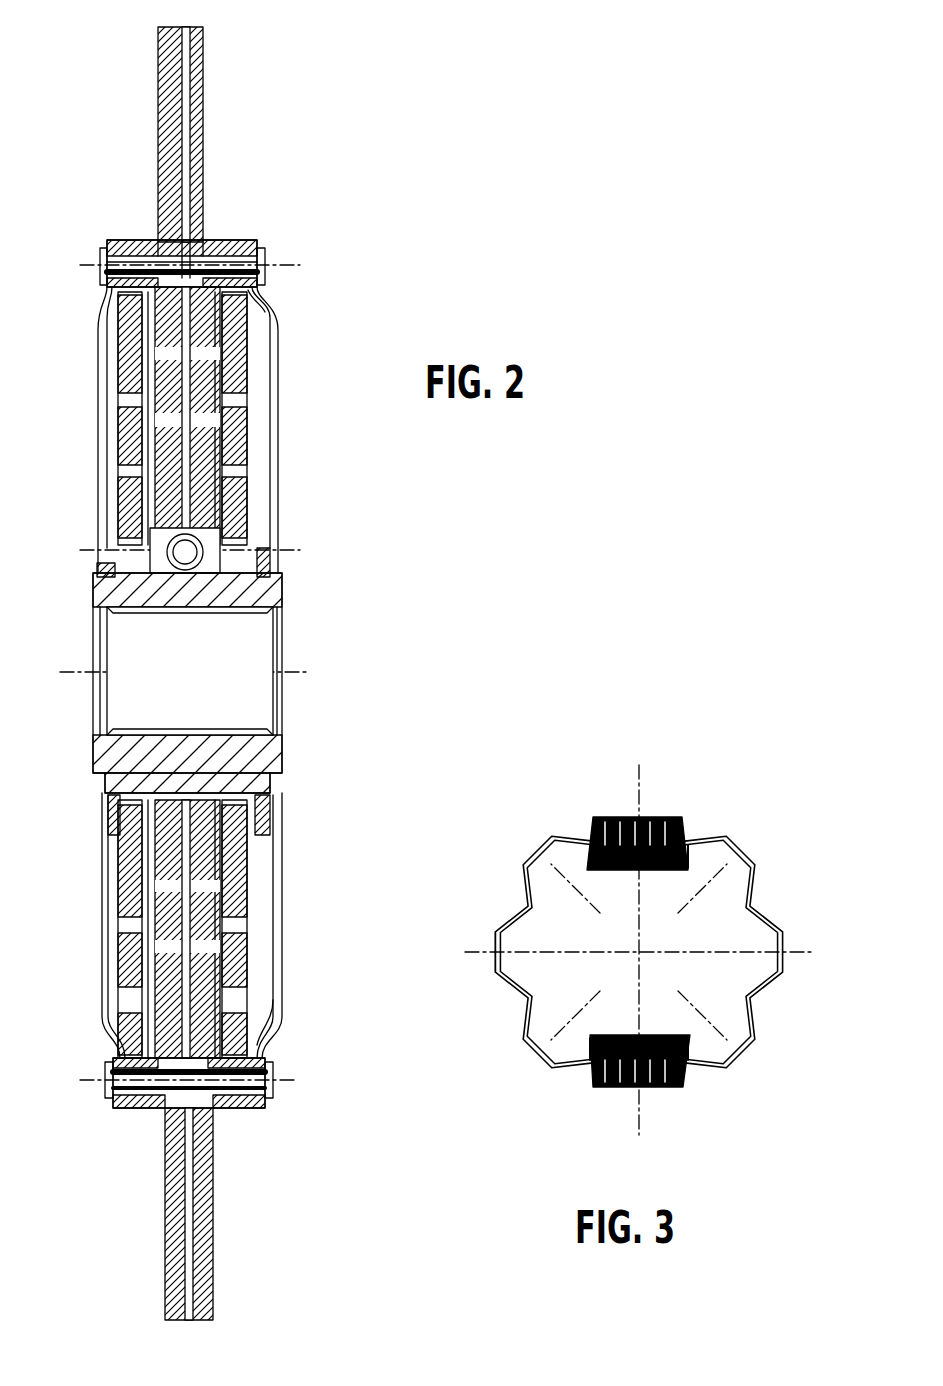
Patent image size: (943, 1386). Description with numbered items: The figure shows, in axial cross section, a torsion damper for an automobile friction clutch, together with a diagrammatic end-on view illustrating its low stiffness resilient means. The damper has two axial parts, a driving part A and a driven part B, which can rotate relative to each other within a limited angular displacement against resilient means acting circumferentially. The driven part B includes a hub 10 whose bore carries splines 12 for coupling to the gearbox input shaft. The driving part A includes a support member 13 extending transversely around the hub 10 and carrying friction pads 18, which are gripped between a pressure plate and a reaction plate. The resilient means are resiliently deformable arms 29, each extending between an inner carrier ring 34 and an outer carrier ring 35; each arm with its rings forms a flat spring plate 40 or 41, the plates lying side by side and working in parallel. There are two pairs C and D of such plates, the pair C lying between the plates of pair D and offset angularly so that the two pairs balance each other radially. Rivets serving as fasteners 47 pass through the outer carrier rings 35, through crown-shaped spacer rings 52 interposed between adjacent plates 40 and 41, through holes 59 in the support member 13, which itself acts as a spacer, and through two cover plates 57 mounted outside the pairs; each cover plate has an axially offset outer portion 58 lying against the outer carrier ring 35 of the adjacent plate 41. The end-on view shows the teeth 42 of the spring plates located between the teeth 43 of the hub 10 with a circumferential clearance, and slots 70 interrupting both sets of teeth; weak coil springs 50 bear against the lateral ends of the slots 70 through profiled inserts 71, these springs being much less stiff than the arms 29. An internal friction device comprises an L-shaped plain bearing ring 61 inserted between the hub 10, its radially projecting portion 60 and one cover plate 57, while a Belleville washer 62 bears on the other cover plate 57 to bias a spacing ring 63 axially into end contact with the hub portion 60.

In FIG. 2, the hub 10 is at (230, 683).
In FIG. 3, the hub 10 is at (700, 940).
In FIG. 2, the splines 12 is at (168, 612).
In FIG. 2, the support member 13 is at (197, 236).
In FIG. 2, the friction pads 18 is at (177, 1323).
In FIG. 2, the resiliently deformable arms 29 is at (258, 373).
In FIG. 2, the inner carrier ring 34 is at (257, 528).
In FIG. 2, the outer carrier ring 35 is at (257, 1013).
In FIG. 2, the spring plate 40 is at (160, 1108).
In FIG. 2, the spring plate 41 is at (133, 1108).
In FIG. 3, the teeth 42 is at (757, 997).
In FIG. 3, the teeth 43 is at (510, 963).
In FIG. 2, the fasteners 47 is at (267, 263).
In FIG. 2, the coil springs 50 is at (217, 512).
In FIG. 3, the coil springs 50 is at (650, 822).
In FIG. 2, the spacer rings 52 is at (243, 292).
In FIG. 2, the cover plates 57 is at (287, 902).
In FIG. 2, the outer portion 58 is at (263, 295).
In FIG. 2, the holes 59 is at (236, 236).
In FIG. 2, the radially projecting portion 60 is at (112, 812).
In FIG. 2, the plain bearing ring 61 is at (93, 565).
In FIG. 2, the Belleville washer 62 is at (272, 592).
In FIG. 2, the spacing ring 63 is at (268, 836).
In FIG. 3, the slots 70 is at (633, 870).
In FIG. 3, the inserts 71 is at (590, 852).
In FIG. 2, the driving part A is at (218, 178).
In FIG. 2, the driven part B is at (300, 719).
In FIG. 2, the pair of spring plates C is at (150, 228).
In FIG. 2, the pair of spring plates D is at (125, 232).